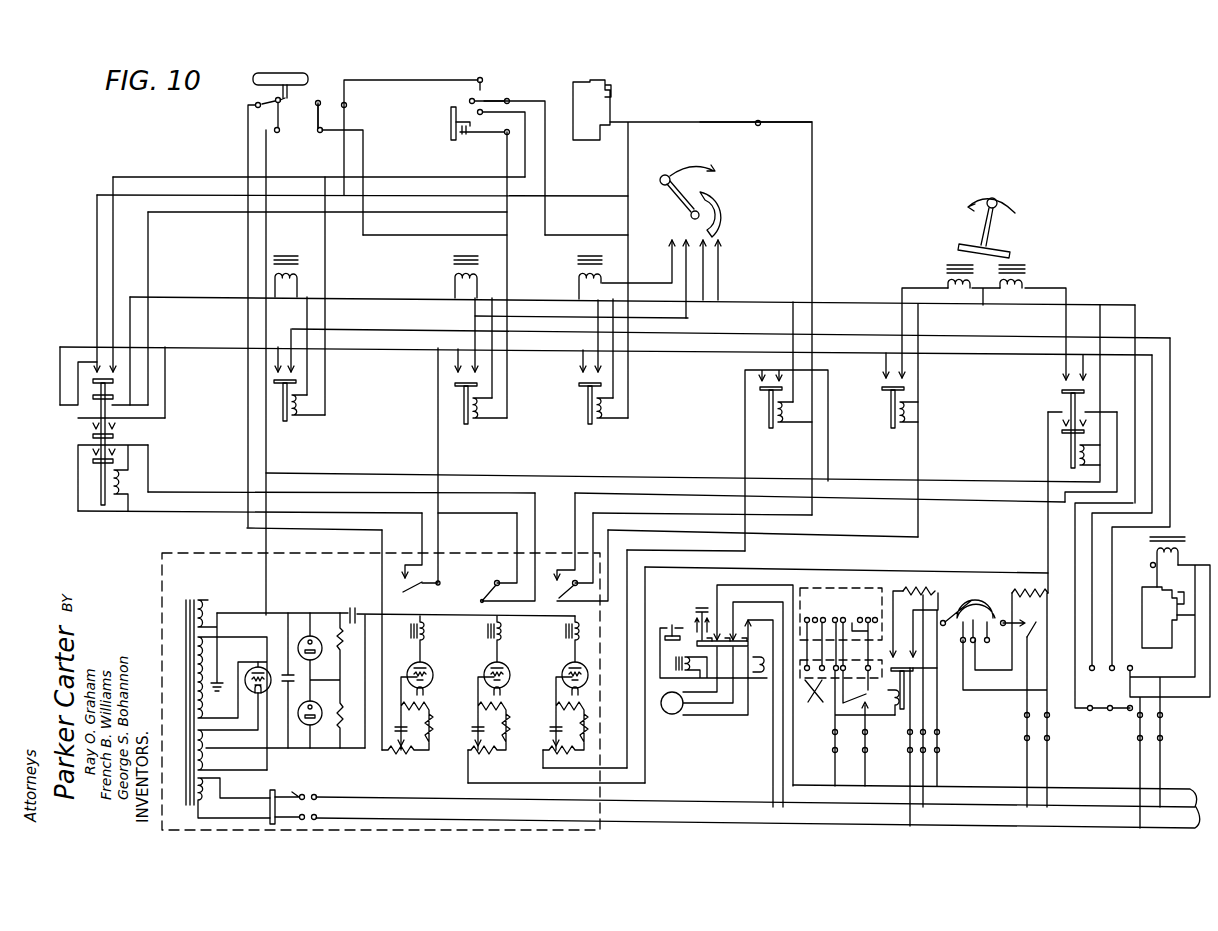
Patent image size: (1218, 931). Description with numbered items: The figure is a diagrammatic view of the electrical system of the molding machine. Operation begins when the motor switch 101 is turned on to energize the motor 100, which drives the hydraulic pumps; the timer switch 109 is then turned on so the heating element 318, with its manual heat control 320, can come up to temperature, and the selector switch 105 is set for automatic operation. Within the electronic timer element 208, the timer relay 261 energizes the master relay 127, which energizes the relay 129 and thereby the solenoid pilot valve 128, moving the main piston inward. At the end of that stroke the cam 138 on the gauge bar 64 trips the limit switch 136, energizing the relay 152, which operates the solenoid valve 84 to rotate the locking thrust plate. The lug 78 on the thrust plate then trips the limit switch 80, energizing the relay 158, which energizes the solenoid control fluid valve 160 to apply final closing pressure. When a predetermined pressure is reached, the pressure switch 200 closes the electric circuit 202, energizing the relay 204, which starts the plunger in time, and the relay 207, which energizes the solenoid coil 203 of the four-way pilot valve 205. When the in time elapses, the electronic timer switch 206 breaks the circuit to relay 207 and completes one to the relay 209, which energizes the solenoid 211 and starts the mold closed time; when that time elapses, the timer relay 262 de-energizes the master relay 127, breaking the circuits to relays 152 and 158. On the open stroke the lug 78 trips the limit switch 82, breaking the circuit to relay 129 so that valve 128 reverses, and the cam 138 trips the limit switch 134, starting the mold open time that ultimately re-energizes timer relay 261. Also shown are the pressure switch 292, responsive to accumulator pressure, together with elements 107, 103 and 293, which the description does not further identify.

The gauge bar 64 is at (284, 72).
The limit switch 134 is at (251, 106).
The limit switch 136 is at (336, 108).
The cam 138 is at (286, 108).
The limit switch 80 is at (482, 90).
The limit switch 82 is at (476, 111).
The lug 78 is at (460, 130).
The pressure switch 200 is at (610, 83).
The electric circuit 202 is at (759, 121).
The selector switch 107 is at (730, 238).
The four-way pilot valve 205 is at (995, 226).
The solenoid coil 203 is at (948, 276).
The solenoid 211 is at (1028, 270).
The solenoid pilot valve 128 is at (284, 258).
The solenoid valve 84 is at (460, 258).
The solenoid control fluid valve 160 is at (588, 258).
The master relay 127 is at (65, 474).
The holding coil relay 129 is at (290, 420).
The relay 152 is at (470, 420).
The relay 158 is at (594, 420).
The relay 204 is at (776, 428).
The relay 207 is at (910, 408).
The relay 209 is at (1062, 434).
The electronic timer element 208 is at (179, 544).
The timer relay 261 is at (416, 594).
The timer relay 262 is at (480, 600).
The electronic timer switch 206 is at (557, 598).
The timer switch 109 is at (278, 796).
The motor switch 101 is at (702, 606).
The relay 103 is at (673, 625).
The motor 100 is at (676, 714).
The manual heat control 320 is at (998, 596).
The heating element 318 is at (1034, 580).
The relay coil 293 is at (1151, 565).
The pressure switch 292 is at (1150, 648).
The selector switch 105 is at (1114, 712).